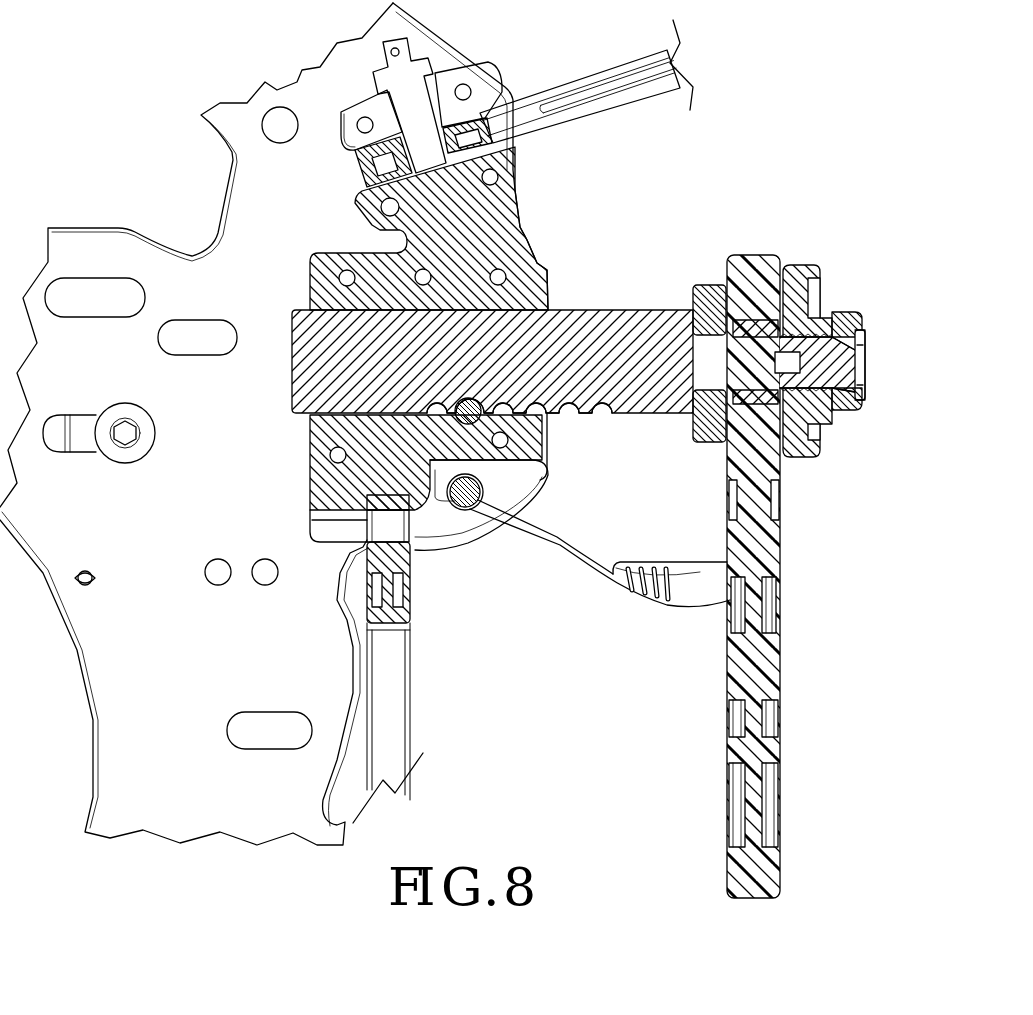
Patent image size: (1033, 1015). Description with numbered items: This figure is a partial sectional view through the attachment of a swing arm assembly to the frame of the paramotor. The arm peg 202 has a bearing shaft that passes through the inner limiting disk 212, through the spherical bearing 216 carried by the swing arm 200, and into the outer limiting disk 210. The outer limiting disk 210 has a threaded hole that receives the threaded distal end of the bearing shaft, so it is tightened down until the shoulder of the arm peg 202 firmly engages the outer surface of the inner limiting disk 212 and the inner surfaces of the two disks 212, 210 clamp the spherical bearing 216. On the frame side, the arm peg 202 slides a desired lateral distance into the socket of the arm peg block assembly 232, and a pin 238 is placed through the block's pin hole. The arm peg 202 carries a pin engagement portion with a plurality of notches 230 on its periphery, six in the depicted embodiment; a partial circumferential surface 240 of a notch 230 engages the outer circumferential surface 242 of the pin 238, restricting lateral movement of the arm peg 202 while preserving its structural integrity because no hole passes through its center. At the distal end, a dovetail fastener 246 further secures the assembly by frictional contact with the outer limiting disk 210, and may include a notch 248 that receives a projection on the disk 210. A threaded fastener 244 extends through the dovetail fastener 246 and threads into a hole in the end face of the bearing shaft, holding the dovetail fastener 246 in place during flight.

The swing arm 200 is at (748, 262).
The arm peg 202 is at (592, 333).
The outer limiting disk 210 is at (803, 267).
The inner limiting disk 212 is at (708, 288).
The spherical bearing 216 is at (750, 403).
The notches 230 is at (452, 398).
The arm peg block assembly 232 is at (487, 228).
The pin 238 is at (537, 404).
The partial circumferential surface 240 is at (482, 405).
The outer circumferential surface 242 is at (490, 458).
The threaded fastener 244 is at (862, 350).
The dovetail fastener 246 is at (850, 322).
The notch 248 is at (847, 397).